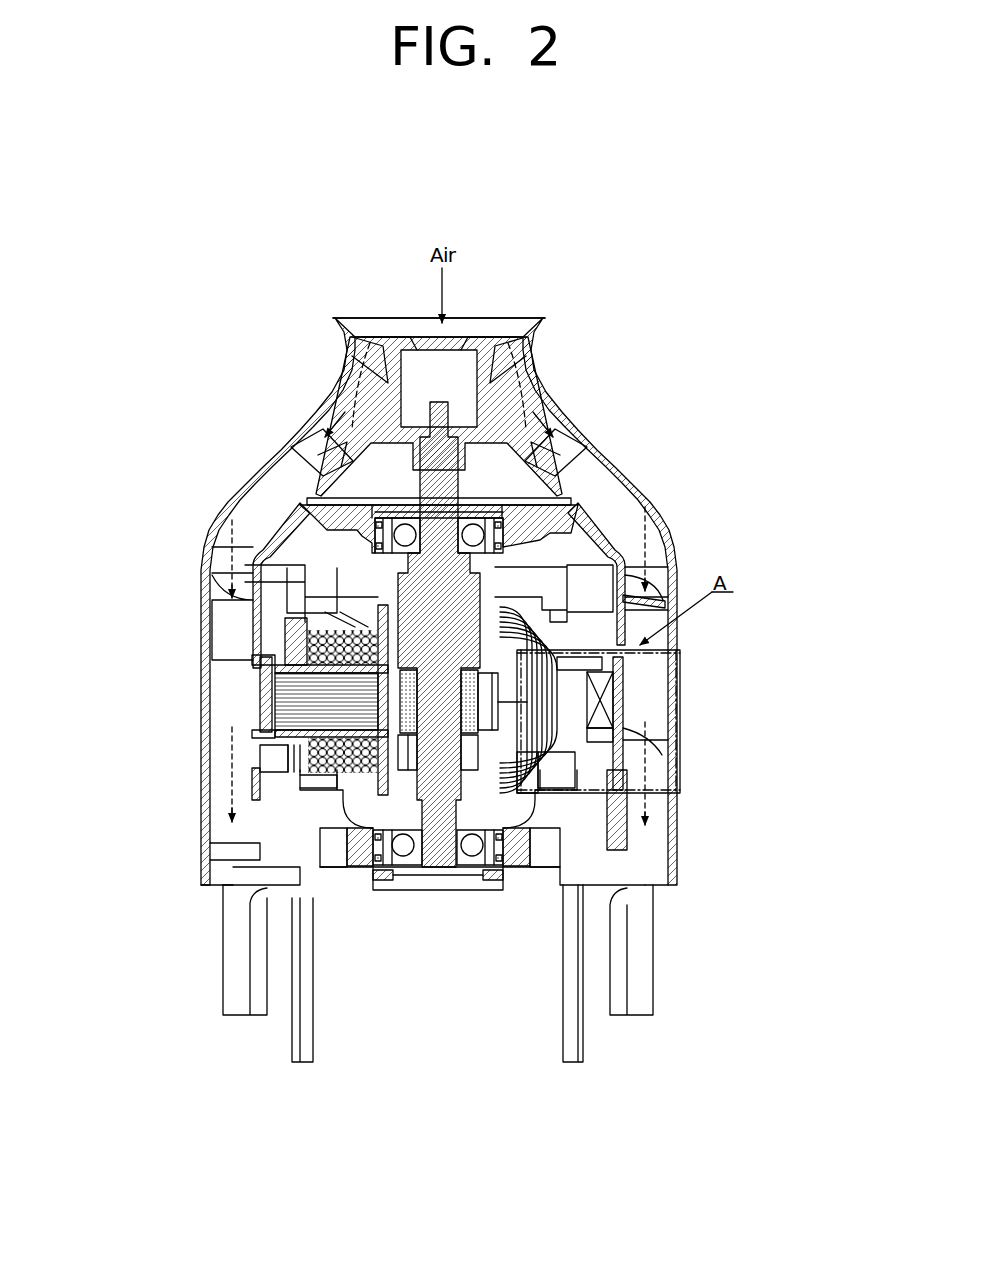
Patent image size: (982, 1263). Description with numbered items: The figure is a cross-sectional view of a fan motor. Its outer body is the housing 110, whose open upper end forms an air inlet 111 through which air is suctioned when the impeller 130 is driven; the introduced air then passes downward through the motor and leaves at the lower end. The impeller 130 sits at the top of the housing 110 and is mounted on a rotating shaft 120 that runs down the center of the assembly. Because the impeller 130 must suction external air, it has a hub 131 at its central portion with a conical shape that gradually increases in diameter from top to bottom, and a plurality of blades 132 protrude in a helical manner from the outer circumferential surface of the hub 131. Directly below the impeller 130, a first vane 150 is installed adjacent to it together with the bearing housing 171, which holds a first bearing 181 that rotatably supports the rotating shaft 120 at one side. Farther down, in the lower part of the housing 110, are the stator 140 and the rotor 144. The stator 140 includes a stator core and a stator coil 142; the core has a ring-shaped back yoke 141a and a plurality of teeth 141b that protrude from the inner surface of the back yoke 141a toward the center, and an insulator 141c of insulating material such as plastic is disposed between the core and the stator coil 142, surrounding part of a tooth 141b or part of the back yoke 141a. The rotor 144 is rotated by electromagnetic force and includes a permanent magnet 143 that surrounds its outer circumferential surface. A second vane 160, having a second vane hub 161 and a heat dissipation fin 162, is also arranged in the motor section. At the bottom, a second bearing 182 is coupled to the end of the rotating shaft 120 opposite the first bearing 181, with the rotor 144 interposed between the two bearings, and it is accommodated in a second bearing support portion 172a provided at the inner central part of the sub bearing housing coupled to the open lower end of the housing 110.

The housing 110 is at (582, 427).
The air inlet 111 is at (506, 327).
The rotating shaft 120 is at (423, 602).
The impeller 130 is at (487, 402).
The hub 131 is at (485, 397).
The blades 132 is at (528, 395).
The stator 140 is at (352, 802).
The back yoke 141a is at (645, 672).
The teeth 141b is at (315, 710).
The insulator 141c is at (295, 642).
The stator coil 142 is at (603, 680).
The permanent magnet 143 is at (596, 725).
The rotor 144 is at (497, 717).
The first vane 150 is at (265, 528).
The second vane 160 is at (227, 696).
The second vane hub 161 is at (255, 685).
The heat dissipation fin 162 is at (227, 714).
The bearing housing 171 is at (290, 523).
The second bearing support portion 172a is at (517, 840).
The first bearing 181 is at (478, 533).
The second bearing 182 is at (482, 868).